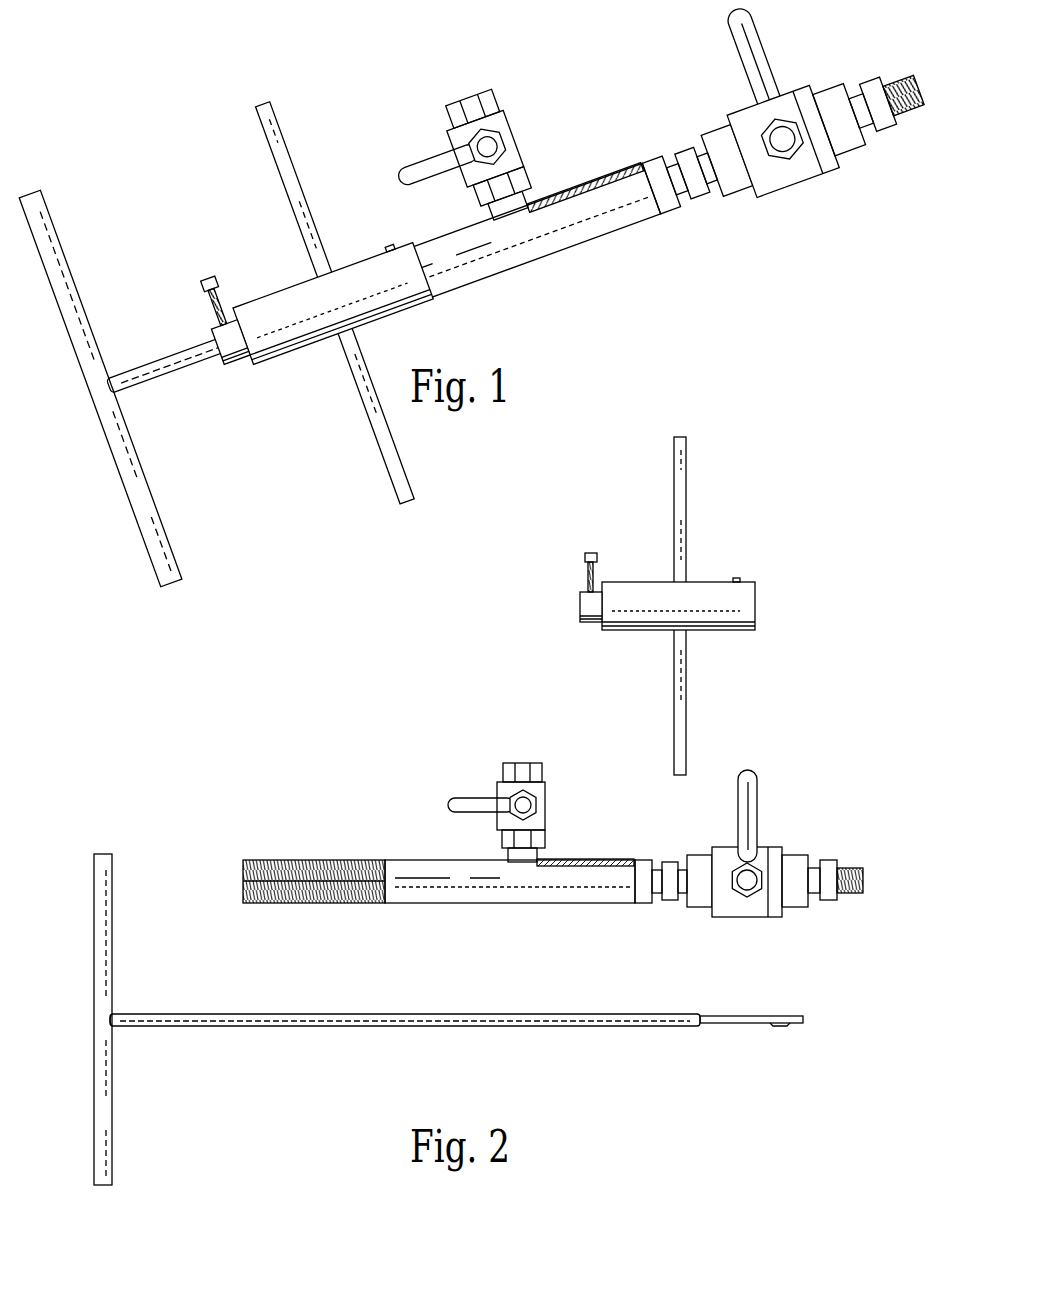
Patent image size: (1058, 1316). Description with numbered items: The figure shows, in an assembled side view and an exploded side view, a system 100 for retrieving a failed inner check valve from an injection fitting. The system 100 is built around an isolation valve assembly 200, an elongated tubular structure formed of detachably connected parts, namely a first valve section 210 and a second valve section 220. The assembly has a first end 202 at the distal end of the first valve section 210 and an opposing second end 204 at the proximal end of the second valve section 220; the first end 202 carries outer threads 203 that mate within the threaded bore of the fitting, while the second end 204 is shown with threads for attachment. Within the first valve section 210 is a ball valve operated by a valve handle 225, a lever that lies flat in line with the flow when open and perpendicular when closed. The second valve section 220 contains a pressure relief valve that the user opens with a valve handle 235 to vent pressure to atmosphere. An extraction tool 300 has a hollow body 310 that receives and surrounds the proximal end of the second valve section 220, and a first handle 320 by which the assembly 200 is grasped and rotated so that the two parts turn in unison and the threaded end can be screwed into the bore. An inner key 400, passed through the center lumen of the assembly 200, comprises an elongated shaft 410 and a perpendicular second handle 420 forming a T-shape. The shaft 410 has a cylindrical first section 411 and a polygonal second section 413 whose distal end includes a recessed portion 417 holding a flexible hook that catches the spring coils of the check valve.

In FIG. 1, the system 100 is at (393, 107).
In FIG. 2, the system 100 is at (358, 720).
In FIG. 1, the isolation valve assembly 200 is at (552, 81).
In FIG. 2, the isolation valve assembly 200 is at (378, 842).
In FIG. 2, the first end 202 is at (863, 877).
In FIG. 2, the outer threads 203 is at (847, 897).
In FIG. 2, the second end 204 is at (288, 860).
In FIG. 1, the first valve section 210 is at (780, 195).
In FIG. 2, the first valve section 210 is at (702, 905).
In FIG. 1, the second valve section 220 is at (575, 245).
In FIG. 2, the second valve section 220 is at (393, 903).
In FIG. 2, the valve handle 225 is at (758, 785).
In FIG. 2, the valve handle 235 is at (472, 798).
In FIG. 2, the extraction tool 300 is at (778, 549).
In FIG. 1, the hollow body 310 is at (261, 292).
In FIG. 2, the hollow body 310 is at (626, 580).
In FIG. 1, the first handle 320 is at (281, 159).
In FIG. 2, the first handle 320 is at (687, 475).
In FIG. 2, the inner key 400 is at (220, 1055).
In FIG. 2, the elongated shaft 410 is at (480, 1028).
In FIG. 2, the first section 411 is at (152, 1012).
In FIG. 2, the second section 413 is at (740, 1024).
In FIG. 2, the recessed portion 417 is at (795, 1024).
In FIG. 1, the second handle 420 is at (122, 481).
In FIG. 2, the second handle 420 is at (93, 930).